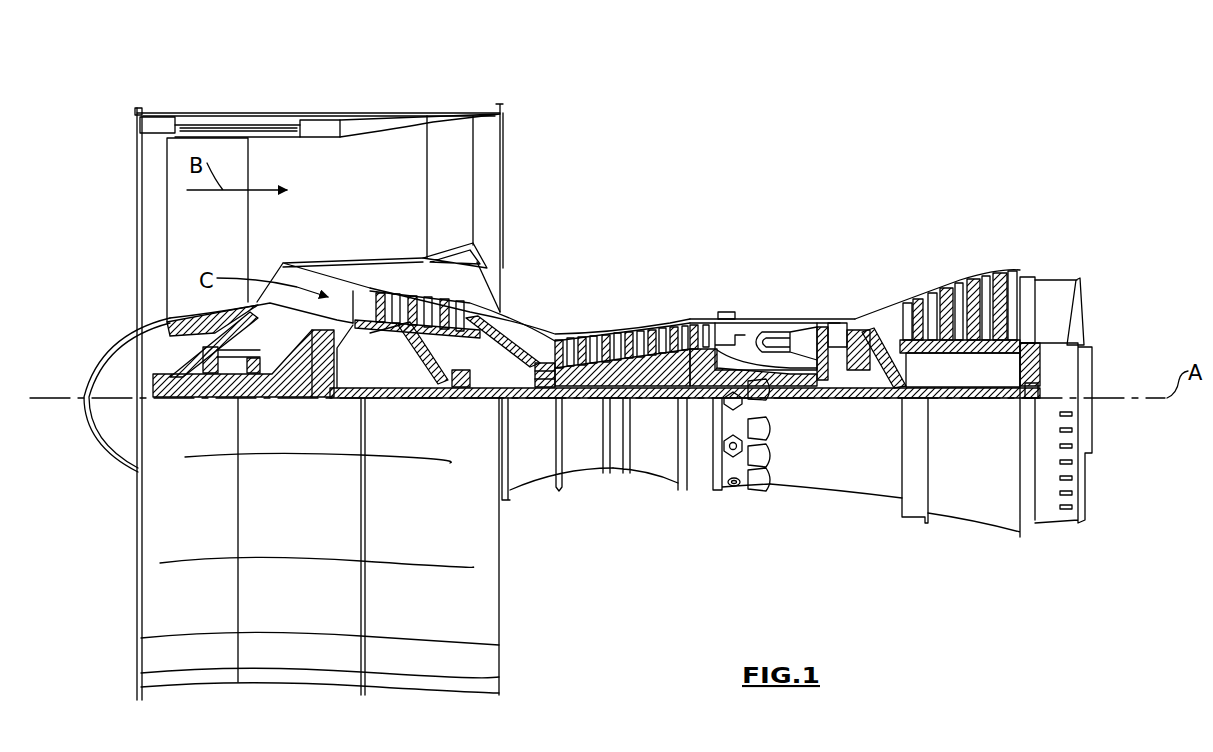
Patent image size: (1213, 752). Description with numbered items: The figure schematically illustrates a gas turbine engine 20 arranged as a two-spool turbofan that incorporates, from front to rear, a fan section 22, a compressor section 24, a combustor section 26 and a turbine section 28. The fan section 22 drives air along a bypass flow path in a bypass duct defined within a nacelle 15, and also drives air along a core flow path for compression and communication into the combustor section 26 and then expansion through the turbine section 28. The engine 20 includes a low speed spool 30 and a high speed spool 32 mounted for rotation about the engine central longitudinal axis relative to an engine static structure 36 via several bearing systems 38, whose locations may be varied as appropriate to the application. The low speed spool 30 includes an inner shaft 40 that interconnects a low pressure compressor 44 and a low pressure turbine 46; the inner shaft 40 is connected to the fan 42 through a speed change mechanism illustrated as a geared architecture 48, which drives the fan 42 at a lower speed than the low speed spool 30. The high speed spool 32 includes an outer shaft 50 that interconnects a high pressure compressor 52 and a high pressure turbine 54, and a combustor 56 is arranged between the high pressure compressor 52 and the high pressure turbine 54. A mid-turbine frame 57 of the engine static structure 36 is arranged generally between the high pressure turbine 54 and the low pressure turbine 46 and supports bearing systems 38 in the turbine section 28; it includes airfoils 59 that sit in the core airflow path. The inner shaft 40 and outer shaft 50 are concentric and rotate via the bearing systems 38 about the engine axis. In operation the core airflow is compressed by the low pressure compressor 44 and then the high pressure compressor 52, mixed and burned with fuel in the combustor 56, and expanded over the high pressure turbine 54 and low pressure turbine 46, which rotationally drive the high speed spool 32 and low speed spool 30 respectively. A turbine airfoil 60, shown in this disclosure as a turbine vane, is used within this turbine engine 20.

The nacelle 15 is at (320, 121).
The gas turbine engine 20 is at (778, 166).
The fan section 22 is at (250, 106).
The compressor section 24 is at (552, 305).
The combustor section 26 is at (772, 294).
The turbine section 28 is at (920, 260).
The low speed spool 30 is at (657, 407).
The high speed spool 32 is at (702, 330).
The engine static structure 36 is at (699, 493).
The bearing systems 38 is at (456, 390).
The inner shaft 40 is at (520, 398).
The fan 42 is at (207, 230).
The low pressure compressor 44 is at (445, 298).
The low pressure turbine 46 is at (967, 290).
The geared architecture 48 is at (318, 388).
The outer shaft 50 is at (790, 386).
The high pressure compressor 52 is at (630, 368).
The high pressure turbine 54 is at (840, 318).
The combustor 56 is at (773, 340).
The mid-turbine frame 57 is at (884, 304).
The airfoils 59 is at (878, 334).
The turbine airfoil 60 is at (910, 308).